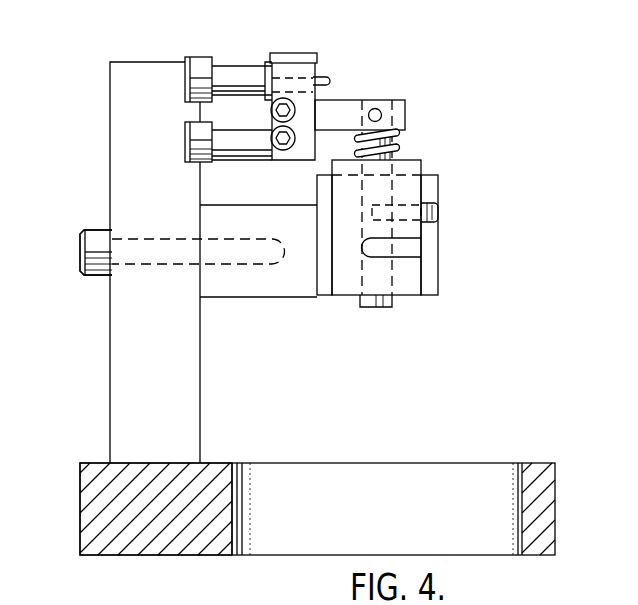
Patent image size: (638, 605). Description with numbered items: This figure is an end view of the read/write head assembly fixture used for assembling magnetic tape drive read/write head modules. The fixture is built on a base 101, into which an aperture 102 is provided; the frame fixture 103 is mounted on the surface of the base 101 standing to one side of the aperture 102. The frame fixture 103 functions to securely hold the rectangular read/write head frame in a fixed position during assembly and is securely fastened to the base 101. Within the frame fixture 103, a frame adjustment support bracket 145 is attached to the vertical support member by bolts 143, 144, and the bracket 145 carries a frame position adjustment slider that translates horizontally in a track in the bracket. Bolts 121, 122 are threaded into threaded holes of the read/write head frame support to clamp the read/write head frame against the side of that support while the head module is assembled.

The base 101 is at (80, 497).
The aperture 102 is at (385, 472).
The frame fixture 103 is at (110, 185).
The bolt 121 is at (185, 140).
The bolt 122 is at (235, 62).
The bolt 143 is at (81, 257).
The bolt 144 is at (72, 290).
The frame adjustment support bracket 145 is at (271, 291).